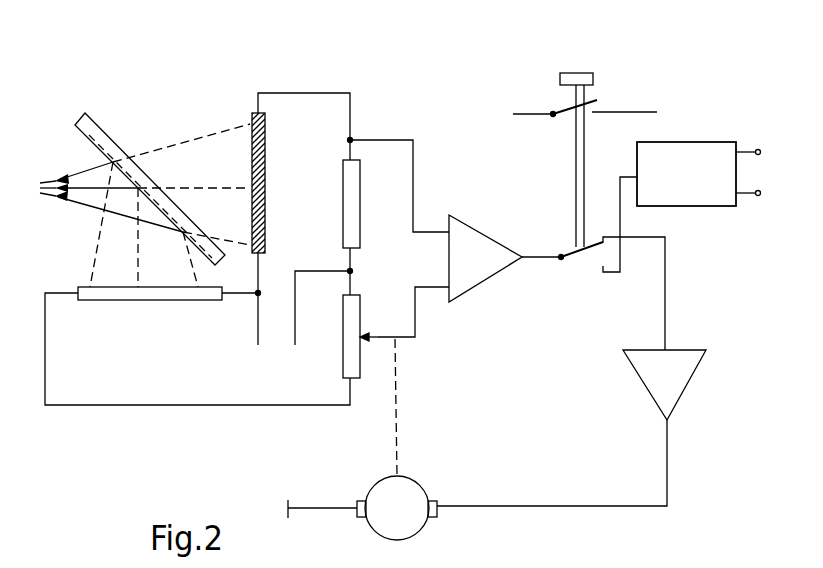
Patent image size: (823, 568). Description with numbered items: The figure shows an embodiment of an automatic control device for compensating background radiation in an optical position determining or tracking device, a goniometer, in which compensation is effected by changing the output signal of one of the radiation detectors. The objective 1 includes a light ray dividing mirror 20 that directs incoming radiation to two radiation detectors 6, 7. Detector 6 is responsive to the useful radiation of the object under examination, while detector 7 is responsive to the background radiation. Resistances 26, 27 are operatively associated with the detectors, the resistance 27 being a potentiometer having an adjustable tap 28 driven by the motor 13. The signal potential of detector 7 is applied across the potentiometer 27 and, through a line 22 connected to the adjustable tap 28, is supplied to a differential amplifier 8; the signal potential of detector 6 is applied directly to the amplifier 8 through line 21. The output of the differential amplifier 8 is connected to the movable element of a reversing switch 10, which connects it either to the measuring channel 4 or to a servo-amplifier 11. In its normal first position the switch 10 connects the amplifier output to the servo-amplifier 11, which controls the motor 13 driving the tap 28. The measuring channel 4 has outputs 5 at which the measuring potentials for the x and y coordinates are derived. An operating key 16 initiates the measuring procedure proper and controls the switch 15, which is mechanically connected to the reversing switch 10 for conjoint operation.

The objective 1 is at (172, 94).
The light ray dividing mirror 20 is at (108, 136).
The radiation detector 6 is at (266, 177).
The radiation detector 7 is at (135, 300).
The resistance 26 is at (362, 200).
The potentiometer 27 is at (366, 318).
The adjustable tap 28 is at (375, 342).
The line 21 is at (414, 164).
The line 22 is at (418, 326).
The differential amplifier 8 is at (484, 229).
The reversing switch 10 is at (560, 256).
The switch 15 is at (553, 113).
The operating key 16 is at (591, 73).
The measuring channel 4 is at (690, 142).
The outputs 5 is at (761, 152).
The servo-amplifier 11 is at (690, 383).
The motor 13 is at (420, 483).